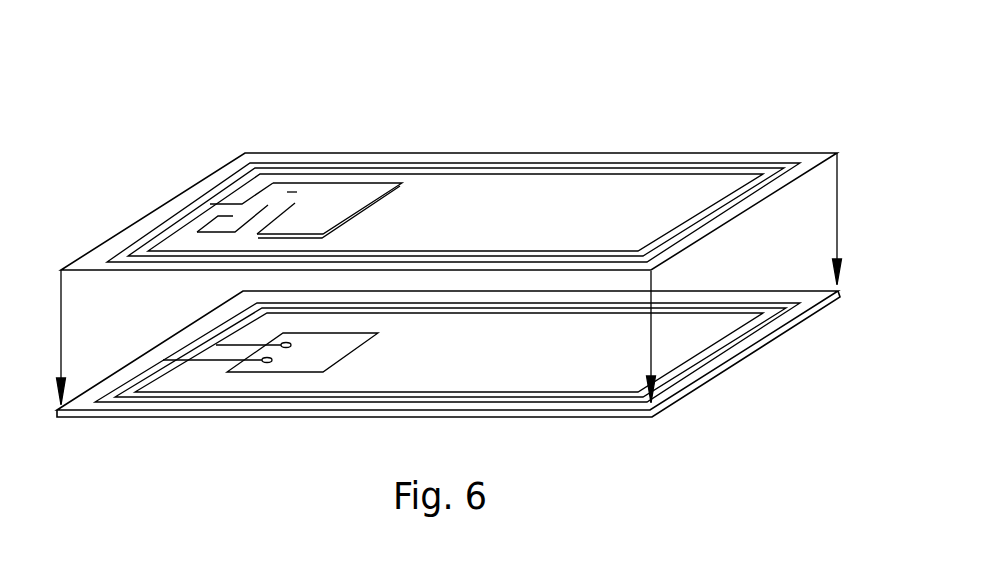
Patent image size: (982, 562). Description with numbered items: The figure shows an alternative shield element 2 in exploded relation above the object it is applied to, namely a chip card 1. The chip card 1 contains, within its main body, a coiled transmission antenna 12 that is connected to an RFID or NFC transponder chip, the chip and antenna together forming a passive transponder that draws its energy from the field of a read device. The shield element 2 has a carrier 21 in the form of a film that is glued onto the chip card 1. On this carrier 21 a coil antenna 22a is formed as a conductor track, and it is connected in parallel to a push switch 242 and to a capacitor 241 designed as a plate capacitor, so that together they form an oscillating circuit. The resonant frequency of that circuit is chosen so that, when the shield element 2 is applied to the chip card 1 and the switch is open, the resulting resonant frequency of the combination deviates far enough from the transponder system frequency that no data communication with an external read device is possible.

The shield element 2 is at (760, 124).
The carrier 21 is at (588, 188).
The coil antenna 22a is at (518, 170).
The capacitor 241 is at (340, 205).
The push switch 242 is at (273, 210).
The chip card 1 is at (675, 333).
The coiled transmission antenna 12 is at (175, 397).